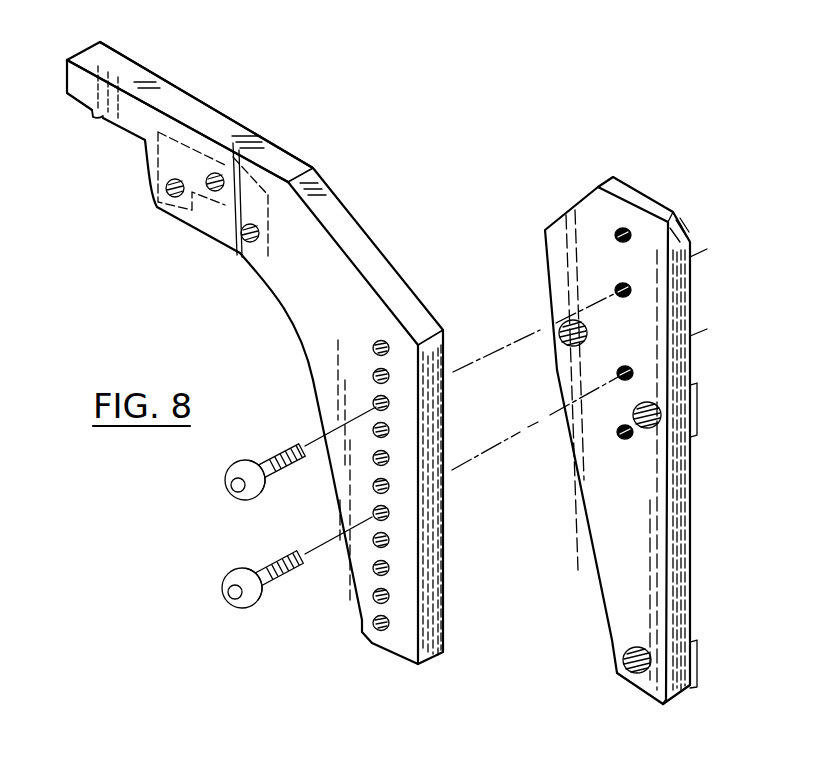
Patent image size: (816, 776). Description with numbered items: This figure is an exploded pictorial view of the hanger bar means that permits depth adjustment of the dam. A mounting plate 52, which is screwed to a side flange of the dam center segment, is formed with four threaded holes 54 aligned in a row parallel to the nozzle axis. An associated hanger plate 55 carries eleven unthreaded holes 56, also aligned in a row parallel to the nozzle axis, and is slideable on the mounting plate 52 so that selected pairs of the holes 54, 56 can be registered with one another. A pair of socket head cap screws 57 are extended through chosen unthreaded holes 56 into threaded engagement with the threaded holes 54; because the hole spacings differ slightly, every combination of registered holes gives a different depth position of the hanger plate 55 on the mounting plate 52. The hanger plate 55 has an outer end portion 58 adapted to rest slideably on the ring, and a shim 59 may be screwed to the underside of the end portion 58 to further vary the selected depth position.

The mounting plate 52 is at (645, 523).
The threaded holes 54 is at (631, 288).
The hanger plate 55 is at (317, 247).
The unthreaded holes 56 is at (390, 538).
The socket head cap screws 57 is at (240, 567).
The outer end portion 58 is at (152, 110).
The shim 59 is at (90, 118).